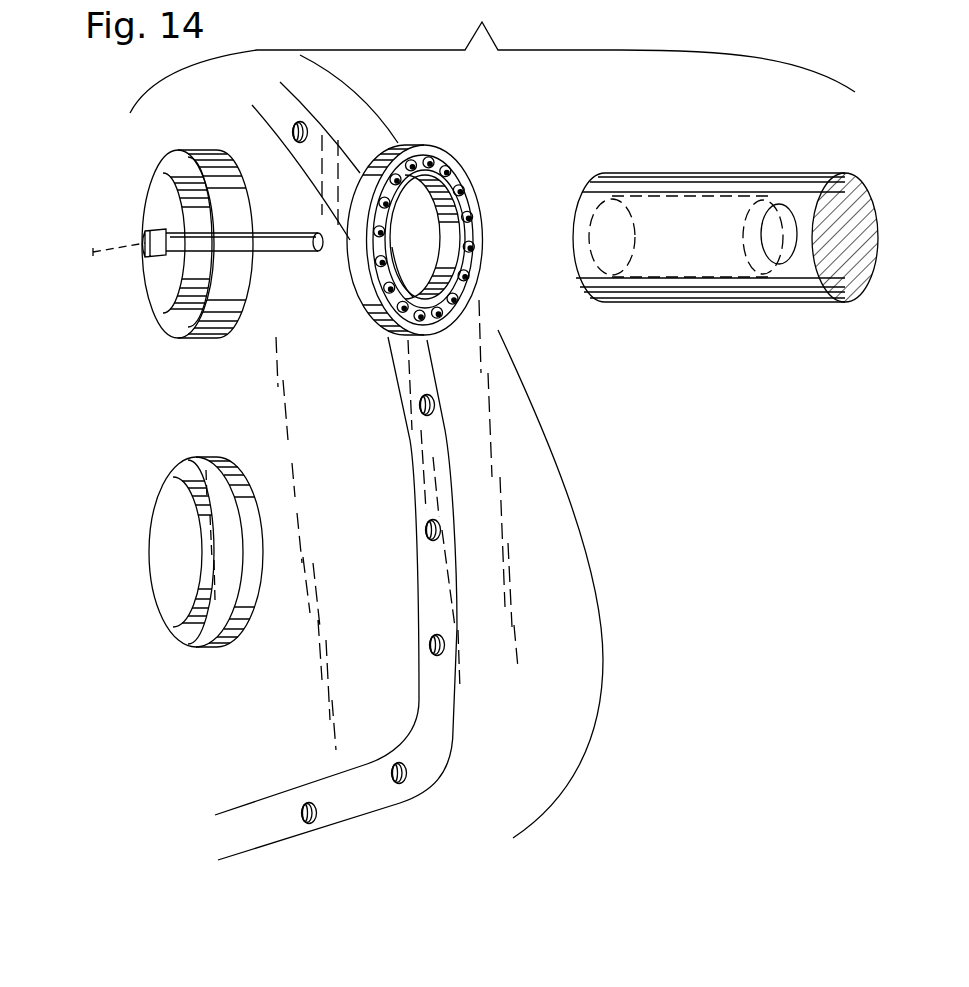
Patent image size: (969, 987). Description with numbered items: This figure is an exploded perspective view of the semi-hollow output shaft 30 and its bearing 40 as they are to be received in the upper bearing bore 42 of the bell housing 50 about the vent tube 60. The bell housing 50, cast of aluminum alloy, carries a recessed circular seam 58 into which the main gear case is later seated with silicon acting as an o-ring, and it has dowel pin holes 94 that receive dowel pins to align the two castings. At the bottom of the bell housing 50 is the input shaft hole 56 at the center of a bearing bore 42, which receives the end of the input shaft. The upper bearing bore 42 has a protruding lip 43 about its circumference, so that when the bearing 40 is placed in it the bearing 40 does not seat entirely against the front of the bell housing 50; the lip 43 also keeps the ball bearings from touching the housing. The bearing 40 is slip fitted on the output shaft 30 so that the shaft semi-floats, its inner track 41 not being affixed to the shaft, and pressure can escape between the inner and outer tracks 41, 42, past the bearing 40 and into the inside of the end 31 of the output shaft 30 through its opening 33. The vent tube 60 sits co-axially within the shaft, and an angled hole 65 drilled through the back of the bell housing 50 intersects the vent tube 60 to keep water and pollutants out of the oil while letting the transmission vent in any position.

The output shaft 30 is at (725, 223).
The end of the output shaft 31 is at (602, 187).
The opening 33 is at (615, 275).
The bearing 40 is at (422, 205).
The inner track 41 is at (430, 162).
The bearing bore 42 is at (222, 163).
The protruding lip 43 is at (185, 175).
The bell housing 50 is at (555, 545).
The input shaft hole 56 is at (170, 548).
The recessed circular seam 58 is at (440, 462).
The vent tube 60 is at (263, 250).
The angled hole 65 is at (122, 237).
The dowel pin holes 94 is at (317, 803).